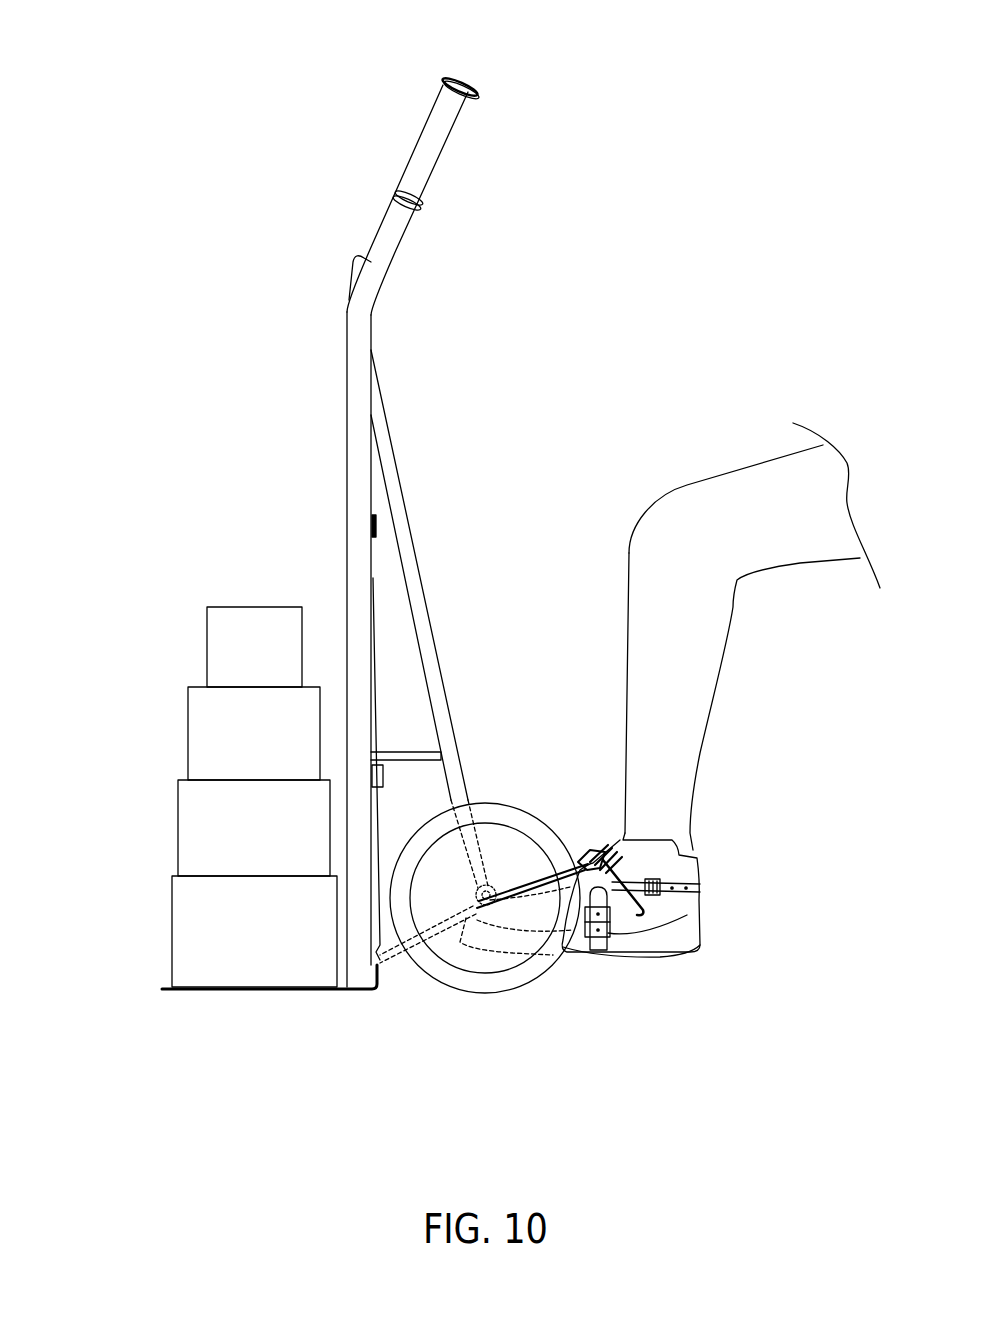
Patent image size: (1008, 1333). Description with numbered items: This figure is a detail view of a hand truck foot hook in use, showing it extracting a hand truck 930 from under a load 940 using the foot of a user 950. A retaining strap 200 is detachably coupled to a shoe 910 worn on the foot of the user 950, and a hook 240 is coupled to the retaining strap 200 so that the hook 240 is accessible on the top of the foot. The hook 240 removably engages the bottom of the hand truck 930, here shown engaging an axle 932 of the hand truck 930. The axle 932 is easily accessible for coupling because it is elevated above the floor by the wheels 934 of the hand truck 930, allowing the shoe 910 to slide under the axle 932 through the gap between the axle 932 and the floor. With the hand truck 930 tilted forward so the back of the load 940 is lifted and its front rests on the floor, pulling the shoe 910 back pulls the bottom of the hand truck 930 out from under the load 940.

The hand truck 930 is at (440, 135).
The load 940 is at (193, 707).
The wheels 934 is at (432, 973).
The axle 932 is at (493, 893).
The hook 240 is at (487, 885).
The user 950 is at (812, 497).
The shoe 910 is at (678, 876).
The retaining strap 200 is at (633, 915).